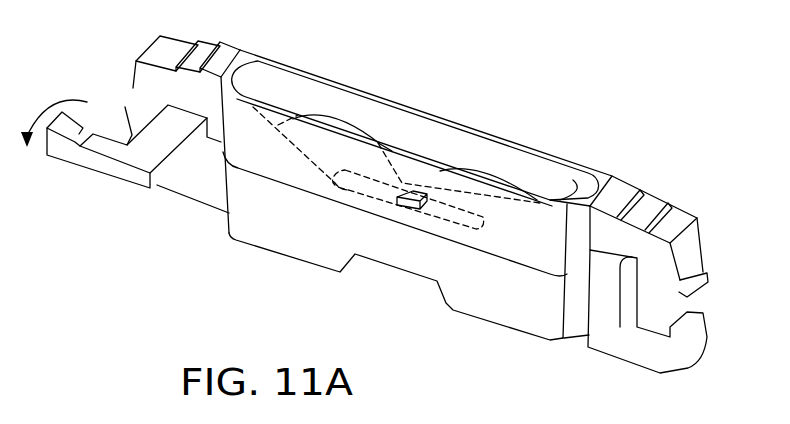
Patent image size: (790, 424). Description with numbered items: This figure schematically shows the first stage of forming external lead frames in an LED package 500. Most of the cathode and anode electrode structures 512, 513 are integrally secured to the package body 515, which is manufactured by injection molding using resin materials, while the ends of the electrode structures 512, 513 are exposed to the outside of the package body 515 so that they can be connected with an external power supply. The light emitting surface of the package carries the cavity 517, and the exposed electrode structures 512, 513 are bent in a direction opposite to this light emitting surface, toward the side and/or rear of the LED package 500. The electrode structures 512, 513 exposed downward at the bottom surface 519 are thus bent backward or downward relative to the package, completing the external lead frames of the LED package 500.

The LED package 500 is at (746, 77).
The cathode electrode structure 512 is at (163, 118).
The anode electrode structure 513 is at (605, 313).
The package body 515 is at (602, 212).
The cavity 517 is at (303, 88).
The bottom surface 519 is at (488, 292).